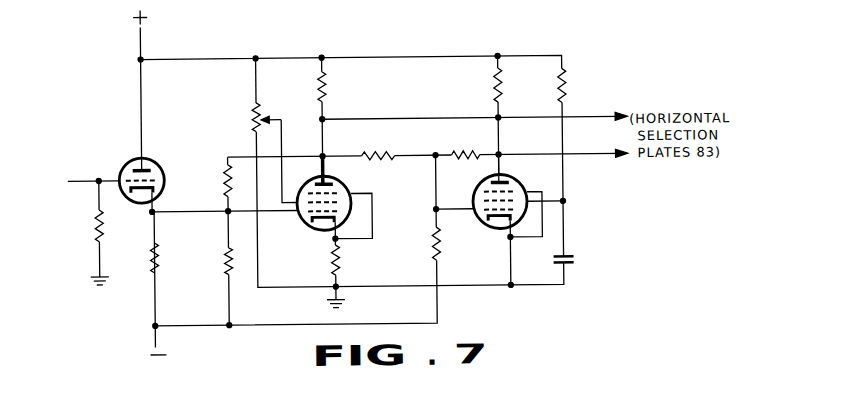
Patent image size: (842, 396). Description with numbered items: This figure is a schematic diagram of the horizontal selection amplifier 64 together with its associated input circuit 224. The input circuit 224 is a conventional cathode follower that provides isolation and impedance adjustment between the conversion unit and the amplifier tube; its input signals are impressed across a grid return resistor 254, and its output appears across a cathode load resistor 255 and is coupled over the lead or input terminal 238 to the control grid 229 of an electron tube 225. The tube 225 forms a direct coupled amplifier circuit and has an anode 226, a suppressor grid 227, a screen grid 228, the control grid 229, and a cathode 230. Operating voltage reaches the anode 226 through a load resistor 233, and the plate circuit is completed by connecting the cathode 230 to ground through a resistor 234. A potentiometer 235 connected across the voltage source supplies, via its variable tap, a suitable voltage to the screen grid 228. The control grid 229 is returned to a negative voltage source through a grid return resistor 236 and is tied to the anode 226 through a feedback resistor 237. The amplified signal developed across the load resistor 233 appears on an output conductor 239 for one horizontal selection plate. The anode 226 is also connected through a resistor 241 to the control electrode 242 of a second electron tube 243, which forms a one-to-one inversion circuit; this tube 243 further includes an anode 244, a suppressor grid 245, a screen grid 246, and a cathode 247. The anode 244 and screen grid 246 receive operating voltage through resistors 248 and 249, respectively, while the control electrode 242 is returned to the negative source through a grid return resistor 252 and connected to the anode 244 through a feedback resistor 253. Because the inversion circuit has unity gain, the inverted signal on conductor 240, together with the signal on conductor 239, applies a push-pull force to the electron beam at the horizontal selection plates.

The horizontal selection amplifier 64 is at (427, 86).
The input circuit 224 is at (128, 148).
The electron tube 225 is at (322, 230).
The anode 226 is at (335, 182).
The suppressor grid 227 is at (307, 192).
The screen grid 228 is at (357, 201).
The control grid 229 is at (354, 215).
The cathode 230 is at (308, 229).
The load resistor 233 is at (326, 89).
The resistor 234 is at (339, 262).
The potentiometer 235 is at (254, 120).
The grid return resistor 236 is at (226, 270).
The feedback resistor 237 is at (226, 176).
The input terminal 238 is at (212, 214).
The output conductor 239 is at (350, 118).
The conductor 240 is at (592, 158).
The resistor 241 is at (386, 148).
The control electrode 242 is at (530, 214).
The electron tube 243 is at (512, 178).
The anode 244 is at (488, 177).
The suppressor grid 245 is at (483, 194).
The screen grid 246 is at (485, 218).
The cathode 247 is at (496, 234).
The resistor 248 is at (496, 90).
The resistor 249 is at (566, 90).
The grid return resistor 252 is at (433, 243).
The feedback resistor 253 is at (468, 149).
The grid return resistor 254 is at (97, 224).
The cathode load resistor 255 is at (159, 256).